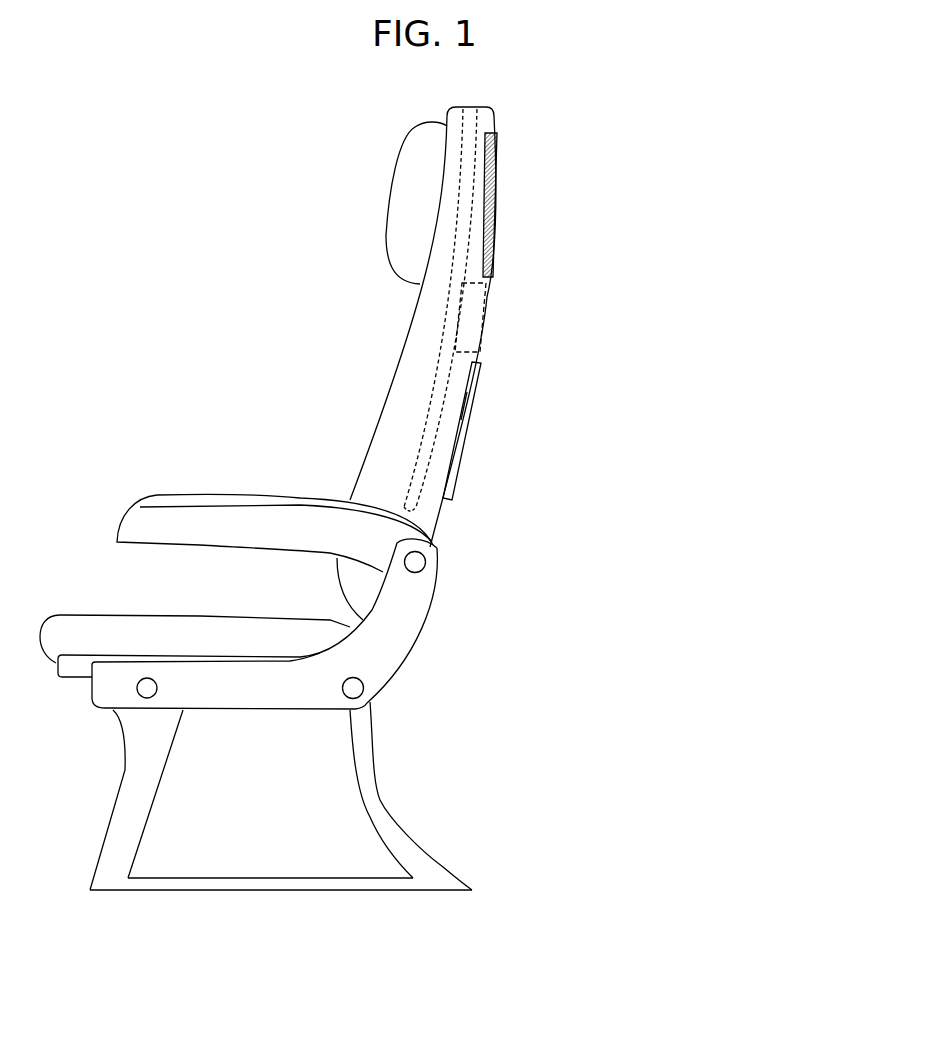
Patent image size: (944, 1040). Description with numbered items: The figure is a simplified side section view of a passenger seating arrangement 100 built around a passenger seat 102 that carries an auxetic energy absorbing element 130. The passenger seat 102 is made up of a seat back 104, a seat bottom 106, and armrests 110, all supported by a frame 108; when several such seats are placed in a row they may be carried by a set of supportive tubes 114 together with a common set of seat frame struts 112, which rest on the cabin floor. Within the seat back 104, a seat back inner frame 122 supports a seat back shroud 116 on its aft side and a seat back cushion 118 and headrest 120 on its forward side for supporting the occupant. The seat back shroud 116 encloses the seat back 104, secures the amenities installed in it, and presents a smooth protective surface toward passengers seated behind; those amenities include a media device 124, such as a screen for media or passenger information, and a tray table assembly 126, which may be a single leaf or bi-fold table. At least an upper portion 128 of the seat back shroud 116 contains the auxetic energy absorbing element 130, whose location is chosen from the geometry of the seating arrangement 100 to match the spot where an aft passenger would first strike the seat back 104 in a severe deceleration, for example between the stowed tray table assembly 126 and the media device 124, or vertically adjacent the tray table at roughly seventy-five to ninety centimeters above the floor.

The passenger seating arrangement 100 is at (548, 85).
The passenger seat 102 is at (590, 240).
The seat back 104 is at (570, 343).
The seat bottom 106 is at (113, 587).
The frame 108 is at (457, 777).
The armrests 110 is at (185, 470).
The seat frame struts 112 is at (148, 803).
The supportive tubes 114 is at (137, 688).
The seat back shroud 116 is at (480, 358).
The seat back cushion 118 is at (397, 372).
The headrest 120 is at (387, 205).
The seat back inner frame 122 is at (437, 378).
The media device 124 is at (497, 168).
The tray table assembly 126 is at (463, 437).
The upper portion 128 is at (484, 184).
The auxetic energy absorbing element 130 is at (486, 294).